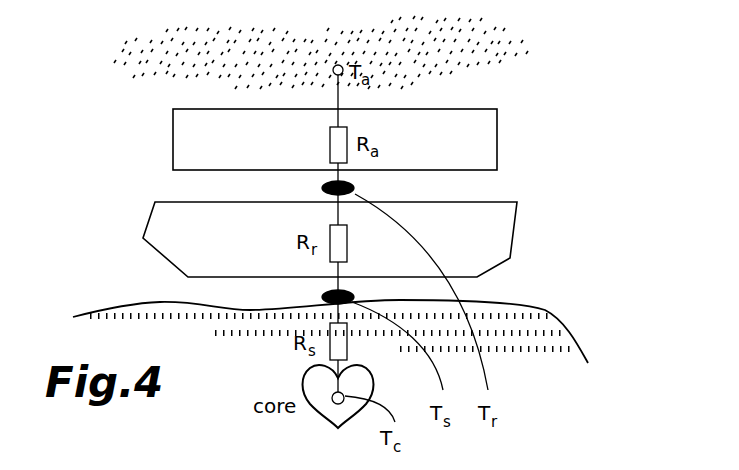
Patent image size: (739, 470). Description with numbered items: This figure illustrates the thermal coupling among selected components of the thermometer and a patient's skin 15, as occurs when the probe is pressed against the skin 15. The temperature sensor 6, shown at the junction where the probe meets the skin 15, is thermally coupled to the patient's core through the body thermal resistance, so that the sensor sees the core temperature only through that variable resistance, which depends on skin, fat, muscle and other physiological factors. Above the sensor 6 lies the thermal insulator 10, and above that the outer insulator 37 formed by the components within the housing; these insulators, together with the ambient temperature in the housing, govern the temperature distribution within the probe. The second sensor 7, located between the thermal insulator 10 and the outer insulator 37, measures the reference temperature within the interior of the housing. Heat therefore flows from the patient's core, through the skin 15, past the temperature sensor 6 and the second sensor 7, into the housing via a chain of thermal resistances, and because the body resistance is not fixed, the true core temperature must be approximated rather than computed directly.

The outer insulator 37 is at (487, 123).
The thermal insulator 10 is at (507, 218).
The second sensor 7 is at (322, 188).
The temperature sensor 6 is at (330, 296).
The patient's skin 15 is at (152, 297).